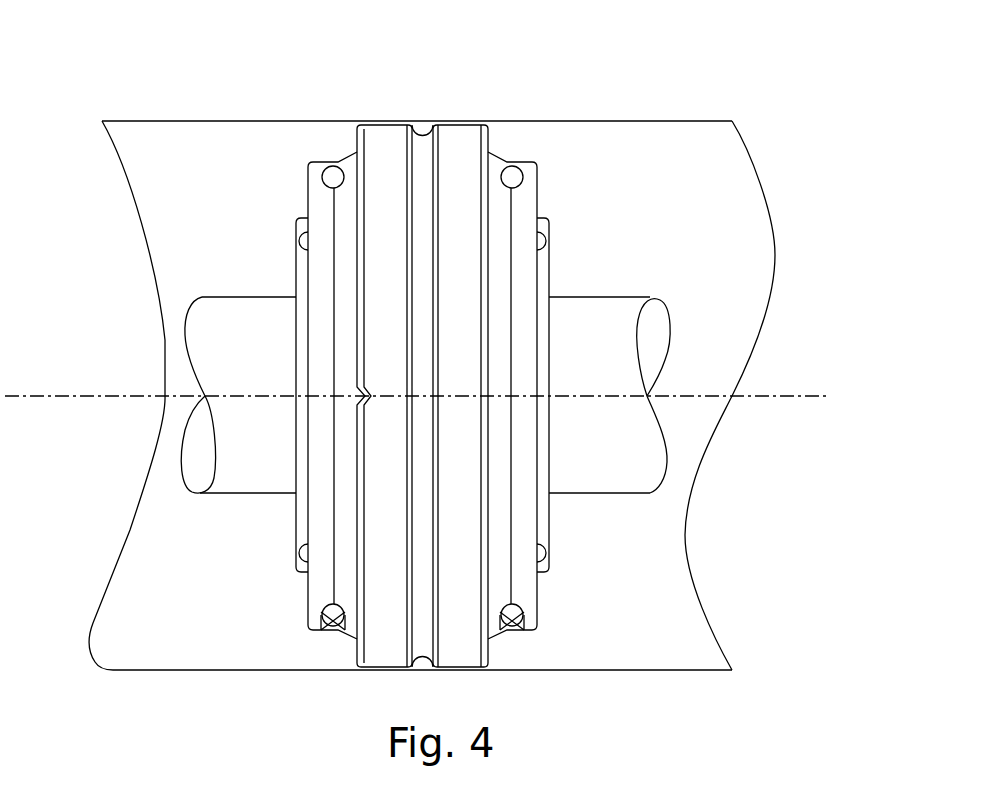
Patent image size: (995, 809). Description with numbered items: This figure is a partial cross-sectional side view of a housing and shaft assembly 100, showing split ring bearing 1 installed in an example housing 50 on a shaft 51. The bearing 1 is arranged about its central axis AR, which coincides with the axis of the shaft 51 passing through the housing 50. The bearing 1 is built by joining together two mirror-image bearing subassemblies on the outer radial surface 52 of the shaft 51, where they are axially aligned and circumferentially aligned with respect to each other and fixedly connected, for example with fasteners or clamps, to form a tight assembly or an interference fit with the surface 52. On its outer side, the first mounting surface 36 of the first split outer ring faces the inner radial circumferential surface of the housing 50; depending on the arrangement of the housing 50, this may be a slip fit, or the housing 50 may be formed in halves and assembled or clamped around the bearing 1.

The housing and shaft assembly 100 is at (115, 74).
The split ring bearing 1 is at (491, 146).
The first mounting surface 36 is at (395, 137).
The housing 50 is at (667, 140).
The shaft 51 is at (613, 310).
The outer radial surface 52 is at (612, 478).
The central axis AR is at (787, 396).